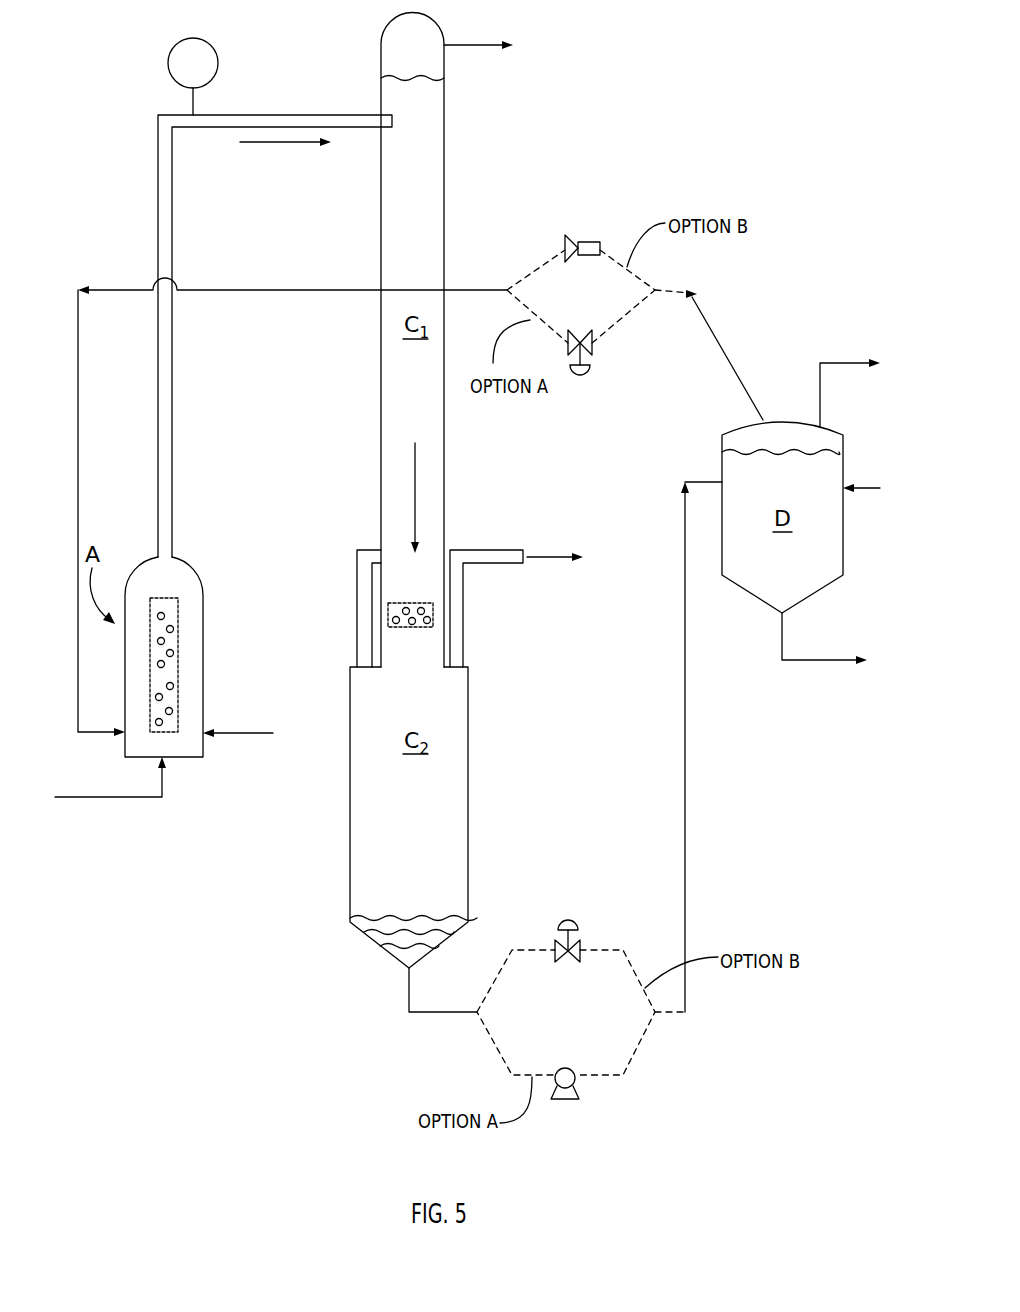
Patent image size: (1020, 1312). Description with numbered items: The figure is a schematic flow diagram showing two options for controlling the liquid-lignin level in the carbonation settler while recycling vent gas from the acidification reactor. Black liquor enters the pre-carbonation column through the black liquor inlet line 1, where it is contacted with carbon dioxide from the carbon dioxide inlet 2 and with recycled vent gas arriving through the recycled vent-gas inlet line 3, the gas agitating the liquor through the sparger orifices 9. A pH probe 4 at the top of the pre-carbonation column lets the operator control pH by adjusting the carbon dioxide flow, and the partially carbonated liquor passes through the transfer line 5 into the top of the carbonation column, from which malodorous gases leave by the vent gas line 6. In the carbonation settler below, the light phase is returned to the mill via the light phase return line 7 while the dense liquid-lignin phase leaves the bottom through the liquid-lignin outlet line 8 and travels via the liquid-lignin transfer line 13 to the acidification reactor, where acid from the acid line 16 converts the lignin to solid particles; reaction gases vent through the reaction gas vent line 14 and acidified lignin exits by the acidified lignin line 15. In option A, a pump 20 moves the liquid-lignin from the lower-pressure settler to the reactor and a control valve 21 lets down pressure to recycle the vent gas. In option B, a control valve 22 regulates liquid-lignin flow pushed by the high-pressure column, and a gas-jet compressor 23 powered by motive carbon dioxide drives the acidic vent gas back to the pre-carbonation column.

The black liquor inlet line 1 is at (117, 797).
The carbon dioxide inlet 2 is at (237, 733).
The recycled vent-gas inlet line 3 is at (77, 655).
The pH probe 4 is at (168, 64).
The transfer line 5 is at (257, 115).
The vent gas line 6 is at (470, 45).
The light phase return line 7 is at (543, 557).
The liquid-lignin outlet line 8 is at (428, 1013).
The sparger orifices 9 is at (178, 663).
The liquid-lignin transfer line 13 is at (684, 765).
The reaction gas vent line 14 is at (838, 363).
The acidified lignin line 15 is at (822, 662).
The acid line 16 is at (862, 492).
The pump 20 is at (580, 1100).
The control valve 21 is at (587, 352).
The control valve 22 is at (577, 922).
The gas-jet compressor 23 is at (580, 245).